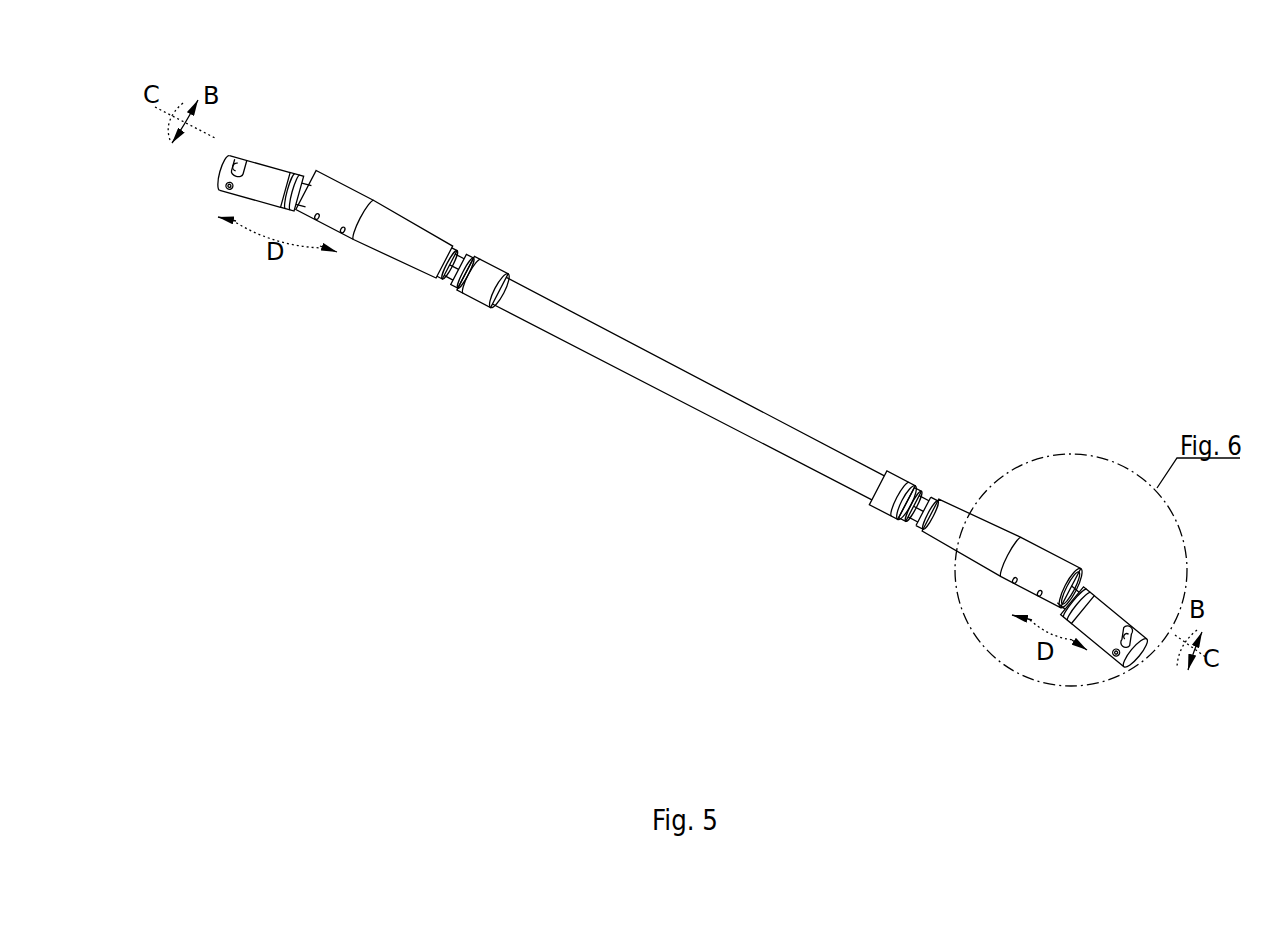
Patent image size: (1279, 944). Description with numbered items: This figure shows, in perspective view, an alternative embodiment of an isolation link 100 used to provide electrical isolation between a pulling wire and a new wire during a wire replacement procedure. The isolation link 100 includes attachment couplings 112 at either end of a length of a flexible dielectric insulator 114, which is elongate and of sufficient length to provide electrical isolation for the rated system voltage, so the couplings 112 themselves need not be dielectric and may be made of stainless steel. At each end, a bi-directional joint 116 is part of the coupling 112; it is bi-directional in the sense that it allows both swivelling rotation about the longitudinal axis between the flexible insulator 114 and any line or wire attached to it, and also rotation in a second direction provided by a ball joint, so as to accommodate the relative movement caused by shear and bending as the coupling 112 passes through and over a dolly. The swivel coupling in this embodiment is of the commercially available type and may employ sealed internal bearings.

The isolation link 100 is at (689, 381).
The attachment coupling 112 is at (1118, 505).
The flexible dielectric insulator 114 is at (837, 387).
The bi-directional joint 116 is at (1173, 557).